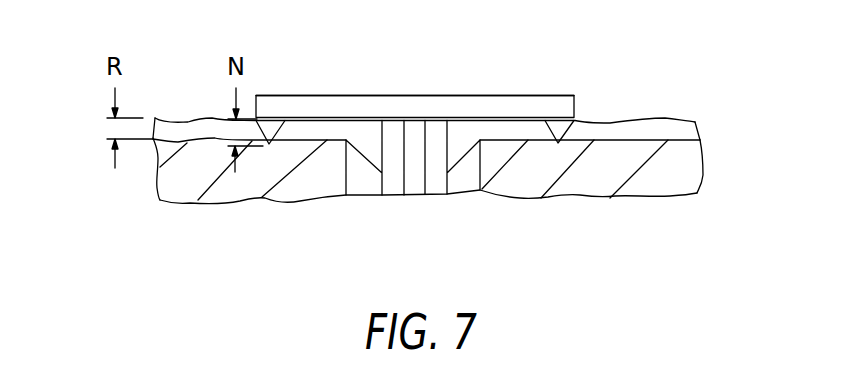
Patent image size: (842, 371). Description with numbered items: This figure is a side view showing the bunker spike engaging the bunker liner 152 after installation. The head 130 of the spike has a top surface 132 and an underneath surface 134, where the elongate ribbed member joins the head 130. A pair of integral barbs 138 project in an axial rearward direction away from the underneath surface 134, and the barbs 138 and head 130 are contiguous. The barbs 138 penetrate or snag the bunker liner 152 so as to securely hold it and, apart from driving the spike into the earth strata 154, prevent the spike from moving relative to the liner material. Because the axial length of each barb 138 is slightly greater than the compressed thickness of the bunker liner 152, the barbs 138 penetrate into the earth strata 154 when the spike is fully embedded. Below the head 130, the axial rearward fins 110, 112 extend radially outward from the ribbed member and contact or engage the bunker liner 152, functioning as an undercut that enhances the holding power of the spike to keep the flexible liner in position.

The axial rearward fin 110 is at (346, 165).
The axial rearward fin 112 is at (480, 165).
The head 130 is at (523, 107).
The top surface 132 is at (455, 95).
The underneath surface 134 is at (305, 121).
The barbs 138 is at (577, 124).
The bunker liner 152 is at (666, 119).
The earth strata 154 is at (673, 170).